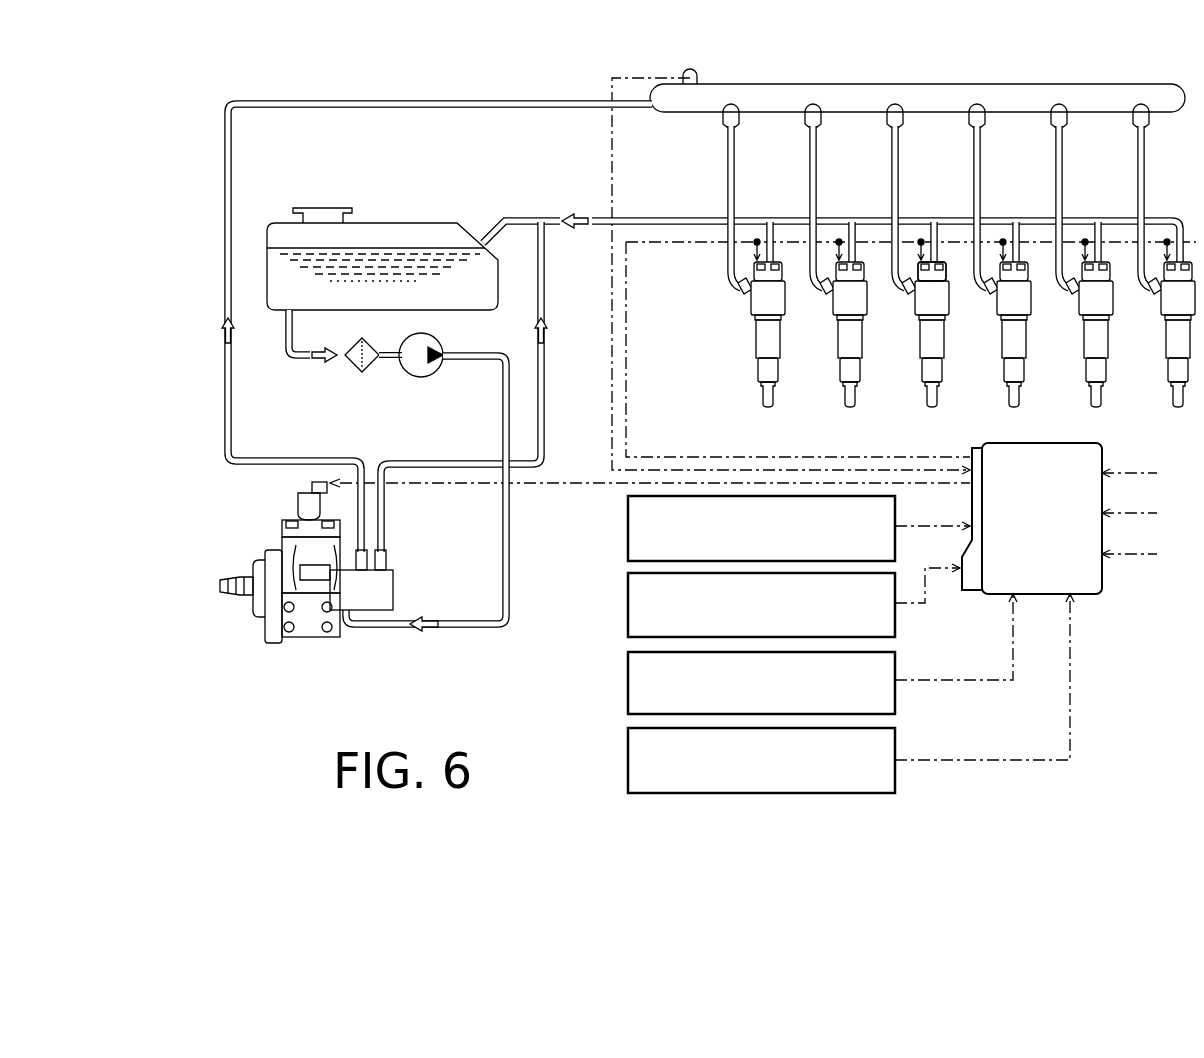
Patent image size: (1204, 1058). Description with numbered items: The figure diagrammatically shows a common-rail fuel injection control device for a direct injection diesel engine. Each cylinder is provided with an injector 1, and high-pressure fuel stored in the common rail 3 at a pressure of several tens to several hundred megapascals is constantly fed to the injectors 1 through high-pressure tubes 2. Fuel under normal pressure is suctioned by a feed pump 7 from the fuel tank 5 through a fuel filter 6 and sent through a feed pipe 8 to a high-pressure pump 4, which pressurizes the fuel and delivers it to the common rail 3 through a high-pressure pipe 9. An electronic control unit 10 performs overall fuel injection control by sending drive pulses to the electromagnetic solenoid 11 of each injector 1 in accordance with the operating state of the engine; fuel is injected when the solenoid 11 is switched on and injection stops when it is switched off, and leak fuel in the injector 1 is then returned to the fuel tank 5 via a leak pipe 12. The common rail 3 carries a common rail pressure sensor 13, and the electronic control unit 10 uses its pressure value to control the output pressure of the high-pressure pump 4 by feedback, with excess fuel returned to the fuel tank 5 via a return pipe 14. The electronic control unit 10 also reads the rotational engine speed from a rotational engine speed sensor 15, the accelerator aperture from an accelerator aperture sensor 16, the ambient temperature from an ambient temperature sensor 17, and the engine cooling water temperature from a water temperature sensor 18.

The injector 1 is at (928, 337).
The high-pressure tube 2 is at (898, 170).
The common rail 3 is at (930, 90).
The high-pressure pump 4 is at (310, 628).
The fuel tank 5 is at (417, 222).
The fuel filter 6 is at (352, 368).
The feed pump 7 is at (423, 378).
The feed pipe 8 is at (503, 556).
The high-pressure pipe 9 is at (225, 400).
The electronic control unit 10 is at (1050, 528).
The electromagnetic solenoid 11 is at (935, 287).
The leak pipe 12 is at (684, 190).
The common rail pressure sensor 13 is at (699, 74).
The return pipe 14 is at (570, 409).
The rotational engine speed sensor 15 is at (627, 531).
The accelerator aperture sensor 16 is at (627, 606).
The ambient temperature sensor 17 is at (627, 684).
The water temperature sensor 18 is at (627, 761).